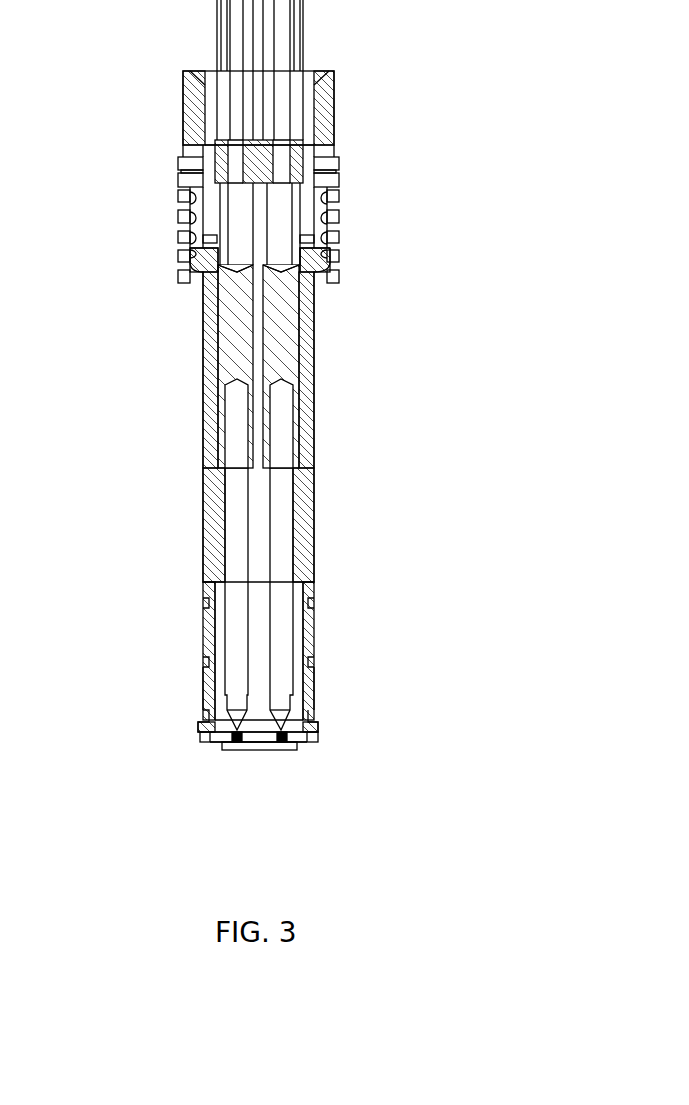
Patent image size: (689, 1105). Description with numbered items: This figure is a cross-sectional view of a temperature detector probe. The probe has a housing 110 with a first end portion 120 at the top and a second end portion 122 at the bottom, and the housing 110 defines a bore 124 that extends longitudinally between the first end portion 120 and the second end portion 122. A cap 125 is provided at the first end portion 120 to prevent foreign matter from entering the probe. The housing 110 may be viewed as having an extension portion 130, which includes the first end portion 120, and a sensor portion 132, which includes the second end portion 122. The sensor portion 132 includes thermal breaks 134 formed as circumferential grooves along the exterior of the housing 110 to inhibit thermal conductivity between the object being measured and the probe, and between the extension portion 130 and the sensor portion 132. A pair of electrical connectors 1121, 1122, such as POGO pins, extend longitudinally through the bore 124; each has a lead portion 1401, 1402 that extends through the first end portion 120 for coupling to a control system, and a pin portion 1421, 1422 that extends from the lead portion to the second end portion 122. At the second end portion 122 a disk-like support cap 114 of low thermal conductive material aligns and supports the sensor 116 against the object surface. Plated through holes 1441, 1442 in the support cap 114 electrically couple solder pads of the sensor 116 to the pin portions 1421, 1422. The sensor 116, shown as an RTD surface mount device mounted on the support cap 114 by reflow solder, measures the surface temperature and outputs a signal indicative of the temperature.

The housing 110 is at (309, 392).
The first electrical connector 1121 is at (233, 292).
The second electrical connector 1122 is at (283, 292).
The support cap 114 is at (303, 745).
The sensor 116 is at (259, 752).
The first end portion 120 is at (315, 68).
The second end portion 122 is at (332, 732).
The bore 124 is at (261, 601).
The cap 125 is at (265, 160).
The extension portion 130 is at (163, 177).
The sensor portion 132 is at (183, 700).
The thermal break 134 is at (203, 600).
The first lead portion 1401 is at (236, 355).
The second lead portion 1402 is at (280, 355).
The first pin portion 1421 is at (240, 660).
The second pin portion 1422 is at (283, 655).
The first plated through hole 1441 is at (233, 740).
The second plated through hole 1442 is at (287, 733).